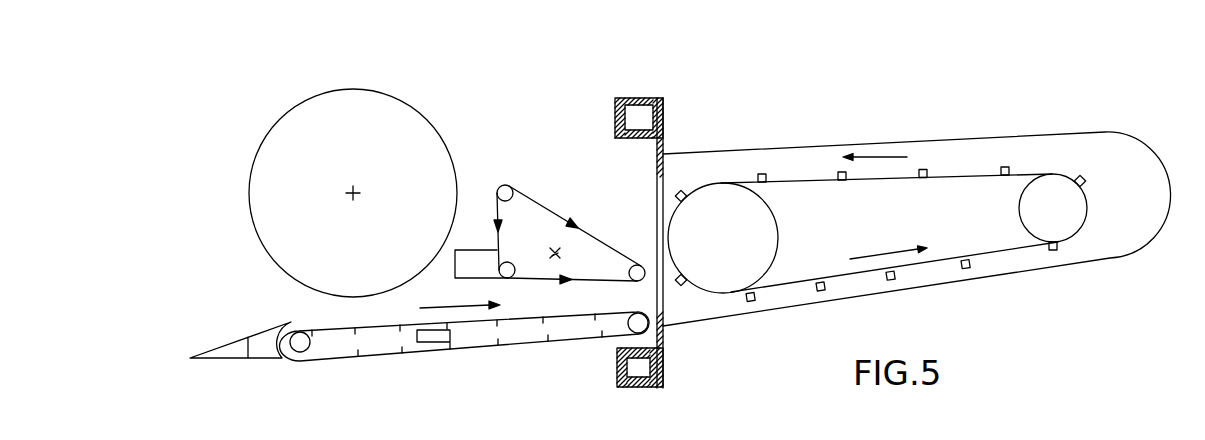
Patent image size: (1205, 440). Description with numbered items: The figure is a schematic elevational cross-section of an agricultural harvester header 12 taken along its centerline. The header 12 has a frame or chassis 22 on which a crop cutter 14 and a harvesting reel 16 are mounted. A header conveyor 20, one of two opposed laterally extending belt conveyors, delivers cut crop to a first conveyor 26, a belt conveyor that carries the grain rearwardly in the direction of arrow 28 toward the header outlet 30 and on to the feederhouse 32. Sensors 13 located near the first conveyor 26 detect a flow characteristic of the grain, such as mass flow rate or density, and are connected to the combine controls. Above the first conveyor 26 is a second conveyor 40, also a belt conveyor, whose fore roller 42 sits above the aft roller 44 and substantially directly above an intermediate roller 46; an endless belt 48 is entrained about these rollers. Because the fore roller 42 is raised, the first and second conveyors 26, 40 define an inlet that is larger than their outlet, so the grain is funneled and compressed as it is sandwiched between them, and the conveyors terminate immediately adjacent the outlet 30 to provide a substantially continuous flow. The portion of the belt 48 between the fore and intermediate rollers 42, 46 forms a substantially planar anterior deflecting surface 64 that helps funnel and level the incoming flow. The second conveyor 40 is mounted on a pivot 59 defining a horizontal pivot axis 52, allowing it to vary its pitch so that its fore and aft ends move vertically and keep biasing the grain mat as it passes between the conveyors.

The header 12 is at (188, 69).
The sensors 13 is at (433, 343).
The crop cutter 14 is at (226, 341).
The harvesting reel 16 is at (285, 113).
The header conveyor 20 is at (465, 250).
The frame or chassis 22 is at (645, 91).
The first conveyor 26 is at (382, 348).
The arrow 28 is at (453, 305).
The header outlet 30 is at (657, 217).
The feederhouse 32 is at (793, 144).
The second conveyor 40 is at (556, 248).
The fore roller 42 is at (501, 186).
The aft roller 44 is at (632, 268).
The intermediate roller 46 is at (508, 280).
The endless belt 48 is at (538, 203).
The horizontal pivot axis 52 is at (552, 256).
The pivot 59 is at (557, 253).
The anterior deflecting surface 64 is at (497, 205).